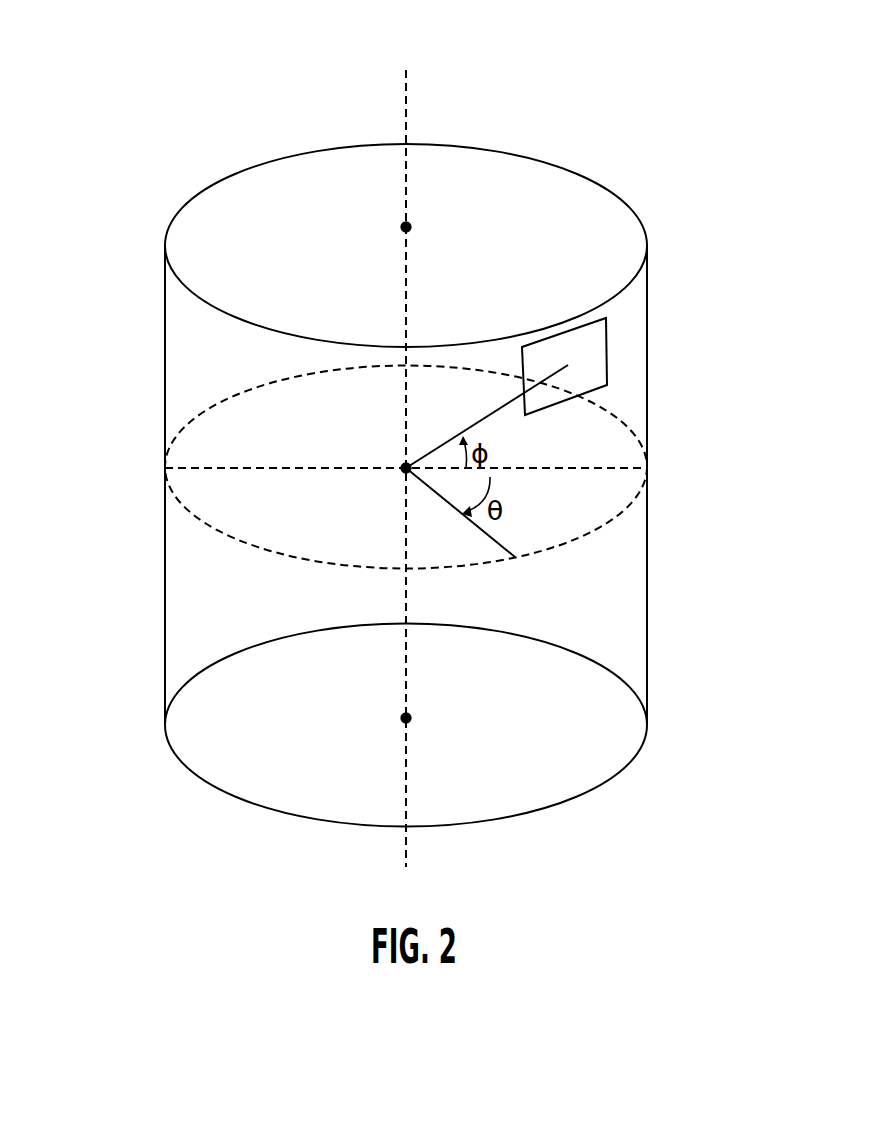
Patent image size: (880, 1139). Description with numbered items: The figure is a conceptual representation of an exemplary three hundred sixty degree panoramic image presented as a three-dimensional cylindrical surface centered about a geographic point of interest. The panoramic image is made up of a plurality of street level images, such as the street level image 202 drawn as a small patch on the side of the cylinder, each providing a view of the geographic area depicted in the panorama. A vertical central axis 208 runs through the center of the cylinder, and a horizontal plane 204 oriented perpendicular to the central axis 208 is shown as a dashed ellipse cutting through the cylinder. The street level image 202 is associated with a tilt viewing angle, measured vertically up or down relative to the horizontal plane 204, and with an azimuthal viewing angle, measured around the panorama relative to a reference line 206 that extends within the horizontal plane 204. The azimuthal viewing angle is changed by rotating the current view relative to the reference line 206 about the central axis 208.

The street level image 202 is at (607, 352).
The horizontal plane 204 is at (165, 352).
The reference line 206 is at (613, 471).
The central axis 208 is at (406, 106).